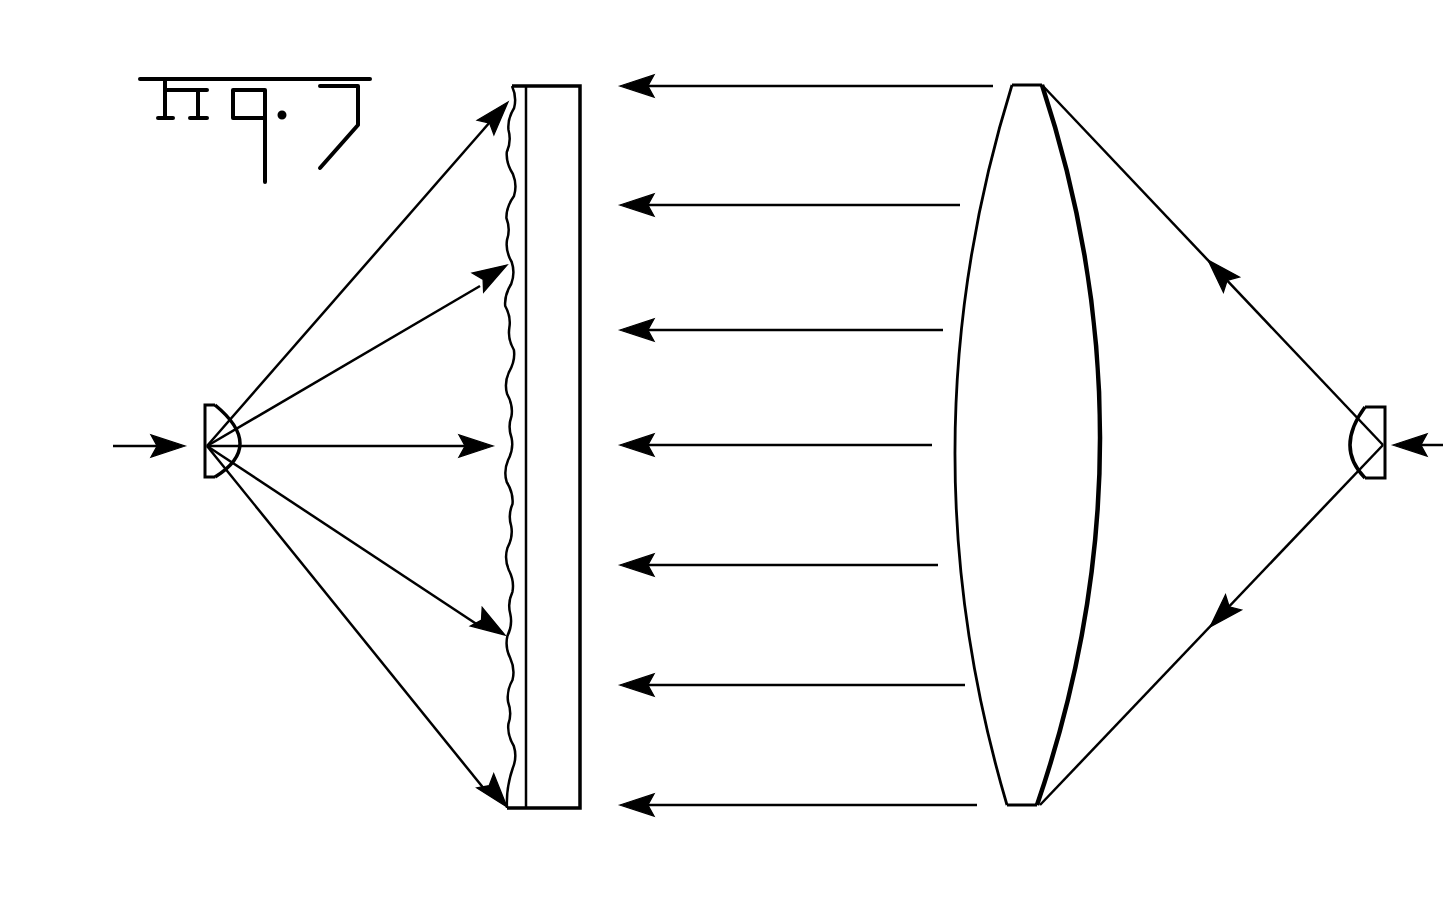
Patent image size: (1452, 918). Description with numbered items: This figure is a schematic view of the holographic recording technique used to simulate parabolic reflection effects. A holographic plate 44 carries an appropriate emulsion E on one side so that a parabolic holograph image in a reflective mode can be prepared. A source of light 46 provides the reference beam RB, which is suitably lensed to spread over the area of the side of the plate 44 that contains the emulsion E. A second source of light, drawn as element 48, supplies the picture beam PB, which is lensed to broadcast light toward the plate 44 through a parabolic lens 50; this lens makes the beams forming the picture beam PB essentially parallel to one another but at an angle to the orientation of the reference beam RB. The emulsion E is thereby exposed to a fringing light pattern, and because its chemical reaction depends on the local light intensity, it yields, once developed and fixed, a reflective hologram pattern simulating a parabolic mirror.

The holographic plate 44 is at (513, 406).
The emulsion E is at (508, 345).
The source of light 46 is at (218, 413).
The reference beam RB is at (298, 340).
The picture beam PB is at (780, 86).
The parabolic lens 50 is at (998, 673).
The detector lens 48 is at (1380, 425).